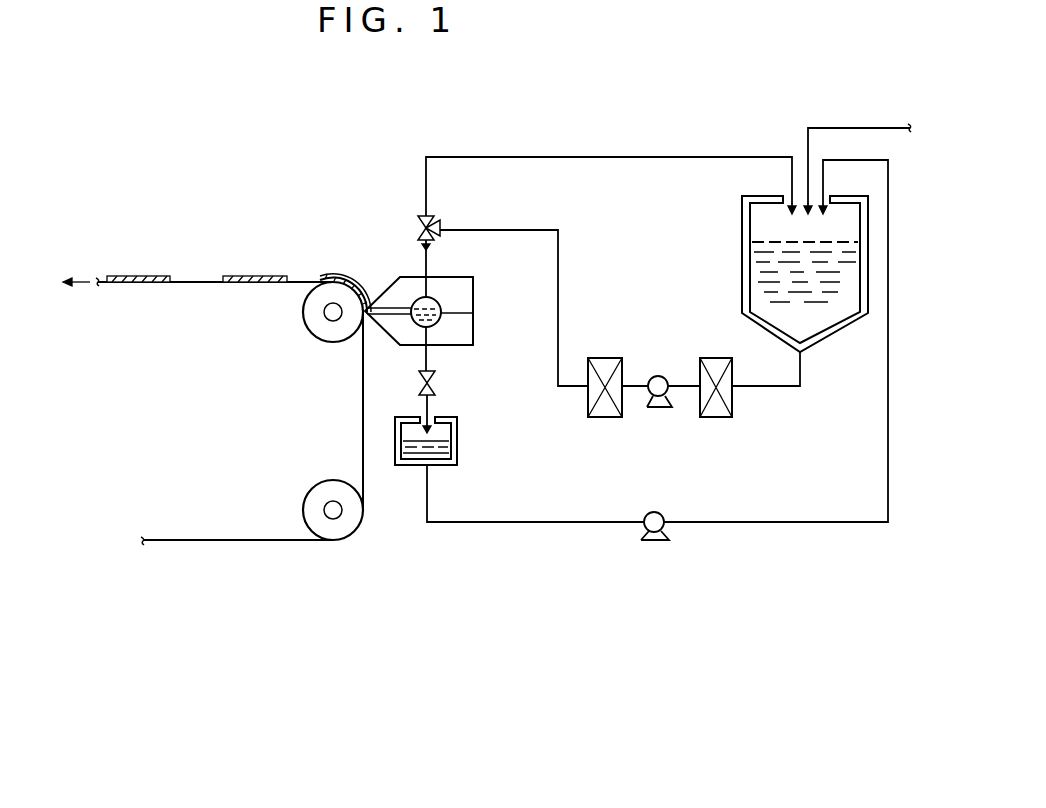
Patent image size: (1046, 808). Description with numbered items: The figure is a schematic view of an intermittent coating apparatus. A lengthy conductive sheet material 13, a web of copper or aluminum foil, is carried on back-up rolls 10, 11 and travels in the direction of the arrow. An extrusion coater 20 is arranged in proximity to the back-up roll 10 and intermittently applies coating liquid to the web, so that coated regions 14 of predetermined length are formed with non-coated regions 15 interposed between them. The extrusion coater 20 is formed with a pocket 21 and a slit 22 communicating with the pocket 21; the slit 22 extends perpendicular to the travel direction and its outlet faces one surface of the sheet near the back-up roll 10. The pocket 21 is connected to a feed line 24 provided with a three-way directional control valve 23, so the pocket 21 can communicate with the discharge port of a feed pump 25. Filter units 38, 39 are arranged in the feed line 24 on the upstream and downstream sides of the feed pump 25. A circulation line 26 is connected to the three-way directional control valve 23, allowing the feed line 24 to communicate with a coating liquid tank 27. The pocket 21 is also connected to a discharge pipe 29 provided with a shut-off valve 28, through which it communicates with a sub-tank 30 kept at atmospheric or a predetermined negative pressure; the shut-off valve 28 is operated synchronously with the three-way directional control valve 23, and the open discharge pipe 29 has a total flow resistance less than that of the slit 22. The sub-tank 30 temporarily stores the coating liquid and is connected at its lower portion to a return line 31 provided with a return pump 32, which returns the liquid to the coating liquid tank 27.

The back-up roll 10 is at (305, 322).
The back-up roll 11 is at (312, 486).
The conductive sheet material 13 is at (232, 538).
The coated regions 14 is at (170, 268).
The non-coated regions 15 is at (221, 268).
The extrusion coater 20 is at (478, 318).
The pocket 21 is at (420, 298).
The slit 22 is at (398, 320).
The three-way directional control valve 23 is at (422, 216).
The feed line 24 is at (560, 275).
The feed pump 25 is at (662, 408).
The circulation line 26 is at (622, 157).
The coating liquid tank 27 is at (740, 222).
The shut-off valve 28 is at (433, 390).
The discharge pipe 29 is at (430, 360).
The sub-tank 30 is at (458, 443).
The return line 31 is at (553, 525).
The return pump 32 is at (655, 510).
The filter unit 38 is at (610, 355).
The filter unit 39 is at (703, 355).